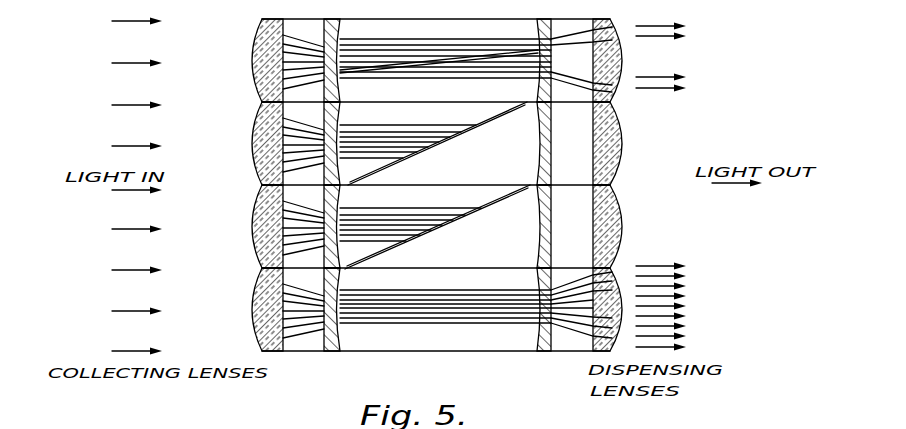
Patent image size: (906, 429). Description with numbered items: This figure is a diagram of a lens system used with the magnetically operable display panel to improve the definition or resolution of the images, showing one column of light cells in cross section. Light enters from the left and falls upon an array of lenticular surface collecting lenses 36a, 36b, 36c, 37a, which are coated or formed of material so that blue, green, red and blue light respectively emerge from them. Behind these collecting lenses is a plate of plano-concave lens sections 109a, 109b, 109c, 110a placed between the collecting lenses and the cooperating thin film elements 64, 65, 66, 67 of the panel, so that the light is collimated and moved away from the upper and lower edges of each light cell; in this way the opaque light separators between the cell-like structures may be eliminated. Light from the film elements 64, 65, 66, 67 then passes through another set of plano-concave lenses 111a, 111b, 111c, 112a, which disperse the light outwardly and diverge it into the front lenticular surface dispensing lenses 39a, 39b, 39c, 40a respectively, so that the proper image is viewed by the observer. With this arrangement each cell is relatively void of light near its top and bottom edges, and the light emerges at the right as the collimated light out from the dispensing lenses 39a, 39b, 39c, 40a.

The lenticular surface lens 36a is at (252, 72).
The lenticular surface lens 36b is at (253, 157).
The lenticular surface lens 36c is at (254, 245).
The lenticular surface lens 37a is at (254, 325).
The collecting plate section 109a is at (336, 30).
The collecting plate section 109b is at (336, 112).
The collecting plate section 109c is at (336, 194).
The collecting plate section 110a is at (336, 277).
The plano-concave lens 111a is at (538, 27).
The plano-concave lens 111b is at (524, 134).
The plano-concave lens 111c is at (538, 220).
The plano-concave lens 112a is at (538, 335).
The thin film element 64 is at (481, 56).
The thin film element 65 is at (424, 152).
The thin film element 66 is at (448, 222).
The thin film element 67 is at (502, 307).
The lenticular surface lens 39a is at (626, 63).
The lenticular surface lens 39b is at (626, 145).
The lenticular surface lens 39c is at (627, 224).
The lens 40a is at (620, 268).